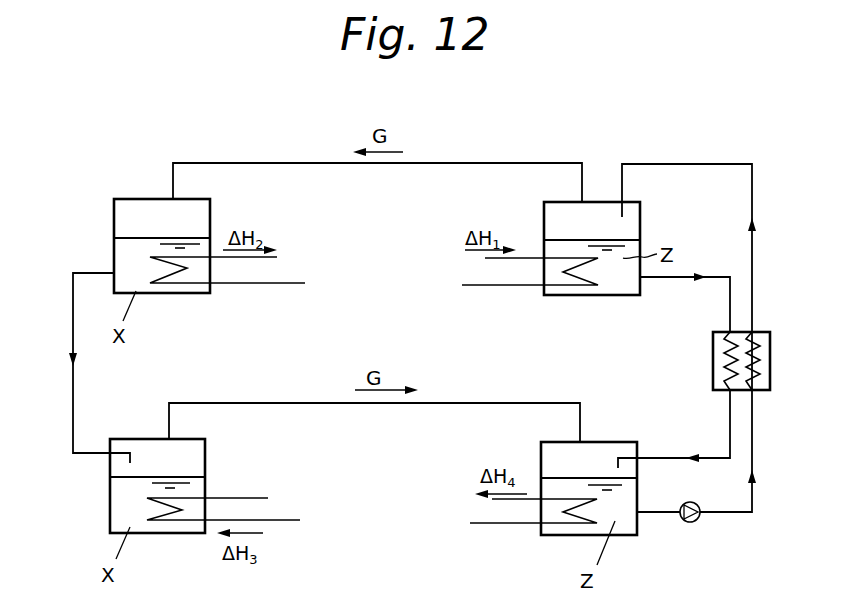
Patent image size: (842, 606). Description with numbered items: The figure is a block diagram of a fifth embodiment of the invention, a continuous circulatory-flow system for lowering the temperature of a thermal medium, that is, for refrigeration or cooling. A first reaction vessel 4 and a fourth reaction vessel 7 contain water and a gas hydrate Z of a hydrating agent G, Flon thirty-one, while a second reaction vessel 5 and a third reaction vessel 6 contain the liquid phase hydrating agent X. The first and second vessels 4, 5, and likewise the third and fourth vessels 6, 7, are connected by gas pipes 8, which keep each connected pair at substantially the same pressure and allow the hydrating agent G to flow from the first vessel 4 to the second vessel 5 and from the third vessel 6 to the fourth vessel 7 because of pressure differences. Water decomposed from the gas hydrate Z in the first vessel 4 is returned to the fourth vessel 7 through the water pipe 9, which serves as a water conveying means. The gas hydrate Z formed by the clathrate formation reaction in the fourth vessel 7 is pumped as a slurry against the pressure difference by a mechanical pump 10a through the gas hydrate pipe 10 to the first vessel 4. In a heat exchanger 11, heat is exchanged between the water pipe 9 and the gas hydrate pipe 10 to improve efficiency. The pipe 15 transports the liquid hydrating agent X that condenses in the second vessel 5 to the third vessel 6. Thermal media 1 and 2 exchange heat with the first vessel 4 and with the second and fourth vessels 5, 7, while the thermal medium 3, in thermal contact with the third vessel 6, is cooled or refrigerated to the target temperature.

The thermal medium 1 is at (500, 285).
The thermal medium 2 is at (245, 283).
The thermal medium 3 is at (300, 520).
The first reaction vessel 4 is at (640, 207).
The second reaction vessel 5 is at (190, 199).
The third reaction vessel 6 is at (183, 533).
The fourth reaction vessel 7 is at (630, 535).
The gas pipe 8 is at (465, 163).
The water pipe 9 is at (729, 425).
The gas hydrate pipe 10 is at (753, 283).
The mechanical pump 10a is at (698, 521).
The heat exchanger 11 is at (770, 364).
The pipe 15 is at (73, 398).